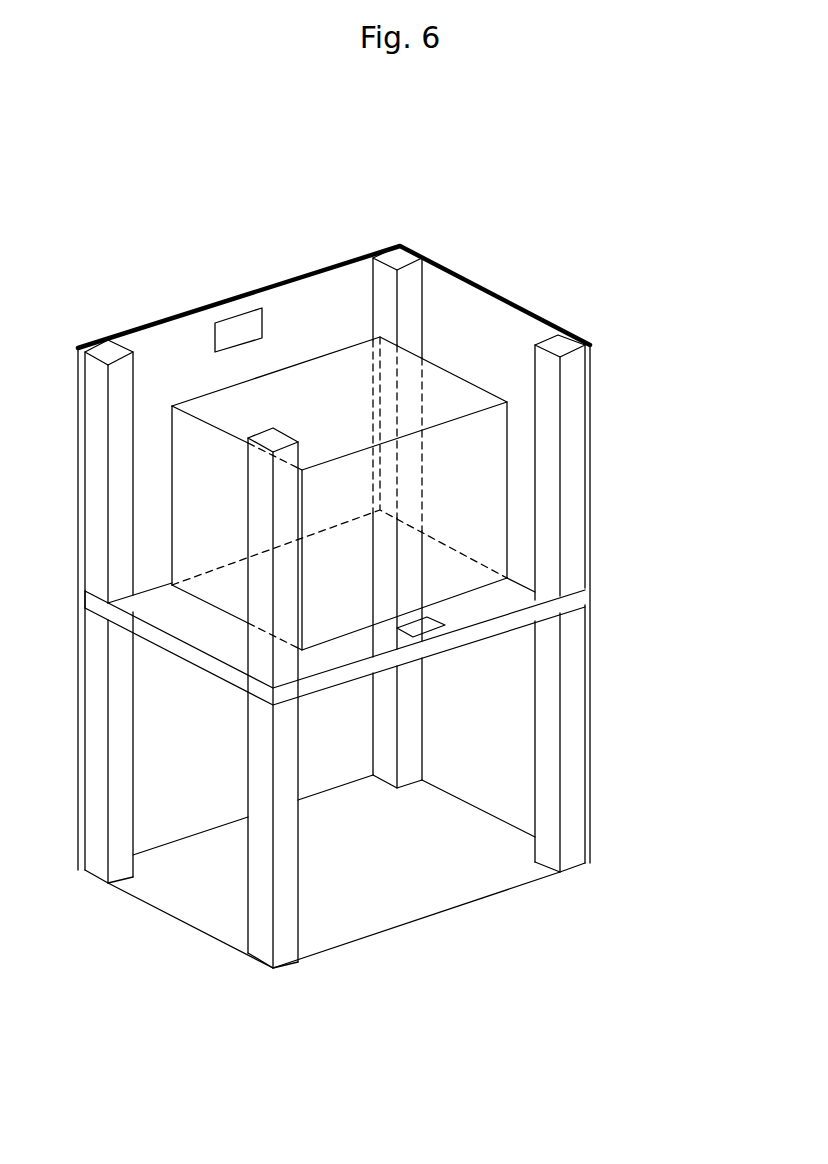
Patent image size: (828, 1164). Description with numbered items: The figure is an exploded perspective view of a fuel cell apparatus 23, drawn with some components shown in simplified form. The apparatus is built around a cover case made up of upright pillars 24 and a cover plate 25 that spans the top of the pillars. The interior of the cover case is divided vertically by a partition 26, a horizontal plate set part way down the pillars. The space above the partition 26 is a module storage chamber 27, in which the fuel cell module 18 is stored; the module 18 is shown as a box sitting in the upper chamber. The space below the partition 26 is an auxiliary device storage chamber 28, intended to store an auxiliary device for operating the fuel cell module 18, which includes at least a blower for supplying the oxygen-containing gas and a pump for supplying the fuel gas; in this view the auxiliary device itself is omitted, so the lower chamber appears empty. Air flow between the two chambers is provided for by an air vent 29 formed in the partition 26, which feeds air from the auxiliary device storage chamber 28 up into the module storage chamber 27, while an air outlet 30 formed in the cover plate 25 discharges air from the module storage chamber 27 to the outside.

The fuel cell apparatus 23 is at (280, 197).
The pillars 24 is at (108, 348).
The cover plate 25 is at (440, 265).
The module storage chamber 27 is at (460, 325).
The fuel cell module 18 is at (452, 390).
The air outlet 30 is at (233, 328).
The partition 26 is at (587, 592).
The air vent 29 is at (430, 620).
The auxiliary device storage chamber 28 is at (173, 747).